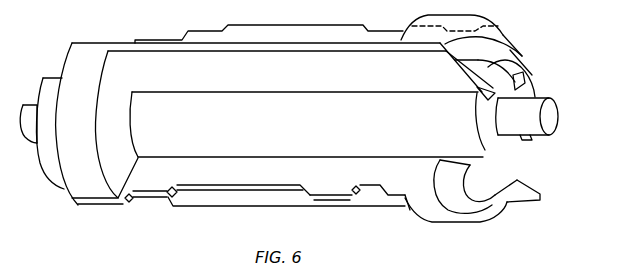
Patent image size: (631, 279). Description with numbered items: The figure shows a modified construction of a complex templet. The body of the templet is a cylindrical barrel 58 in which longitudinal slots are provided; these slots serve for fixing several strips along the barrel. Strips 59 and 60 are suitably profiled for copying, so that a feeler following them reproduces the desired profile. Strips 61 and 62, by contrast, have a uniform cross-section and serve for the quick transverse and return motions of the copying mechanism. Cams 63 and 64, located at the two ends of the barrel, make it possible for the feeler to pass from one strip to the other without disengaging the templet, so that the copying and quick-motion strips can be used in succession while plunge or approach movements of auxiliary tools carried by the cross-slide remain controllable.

The cylindrical barrel 58 is at (333, 134).
The profiled strip 59 is at (315, 30).
The profiled strip 60 is at (333, 182).
The uniform cross-section strip 61 is at (268, 60).
The uniform cross-section strip 62 is at (272, 197).
The cam 63 is at (70, 68).
The cam 64 is at (482, 21).